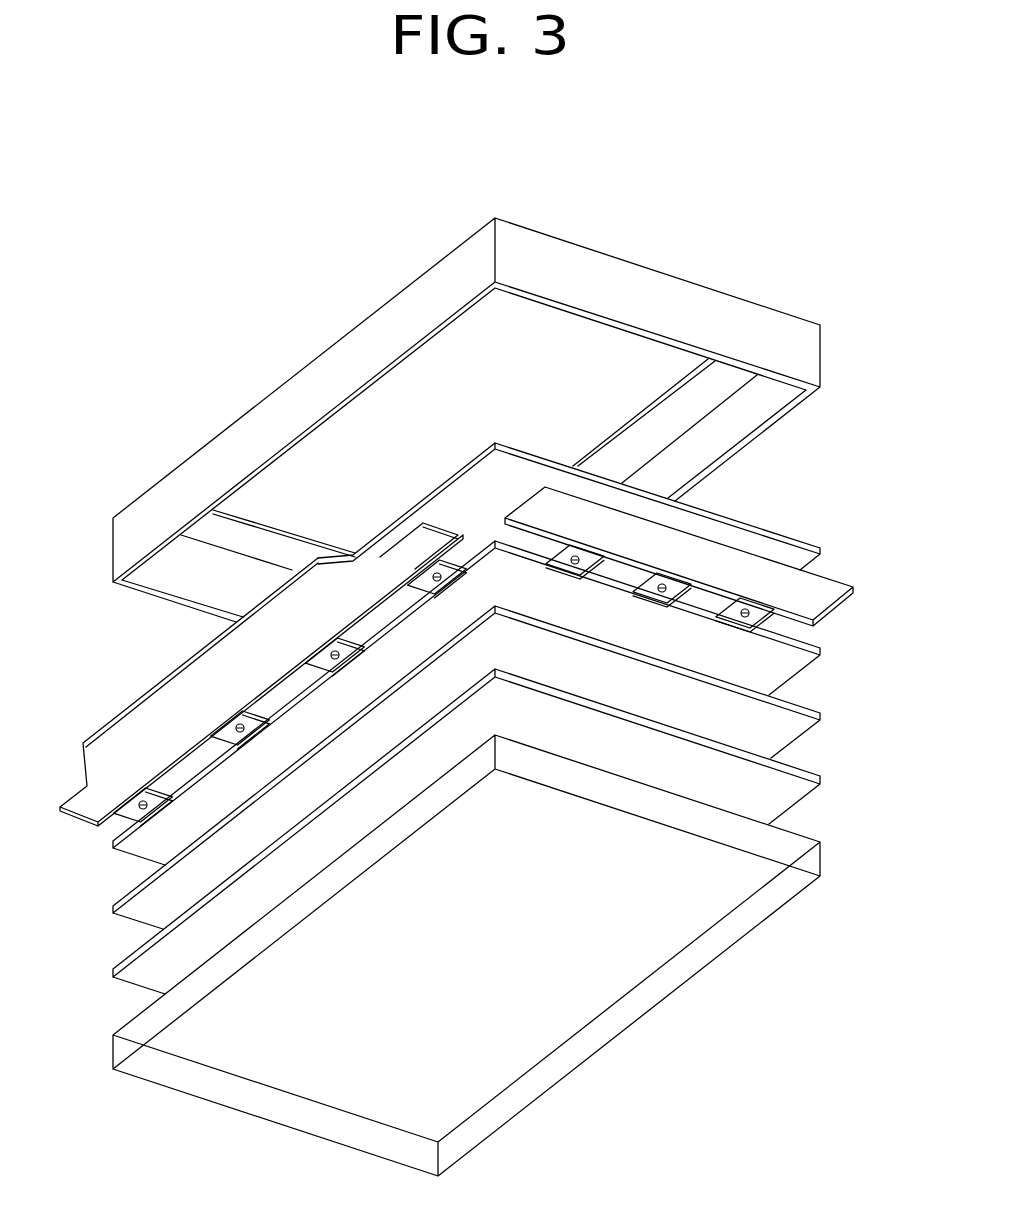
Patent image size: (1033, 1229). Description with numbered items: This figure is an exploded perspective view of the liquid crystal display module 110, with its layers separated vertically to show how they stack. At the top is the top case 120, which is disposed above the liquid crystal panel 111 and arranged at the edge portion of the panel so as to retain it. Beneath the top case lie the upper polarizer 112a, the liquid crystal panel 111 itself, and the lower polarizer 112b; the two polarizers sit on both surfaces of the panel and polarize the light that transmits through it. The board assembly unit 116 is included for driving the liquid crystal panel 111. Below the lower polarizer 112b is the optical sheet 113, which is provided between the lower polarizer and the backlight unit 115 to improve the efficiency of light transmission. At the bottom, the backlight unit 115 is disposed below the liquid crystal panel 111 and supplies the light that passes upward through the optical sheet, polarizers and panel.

The liquid crystal display module 110 is at (918, 166).
The top case 120 is at (810, 345).
The upper polarizer 112a is at (822, 549).
The board assembly unit 116 is at (816, 572).
The liquid crystal panel 111 is at (822, 649).
The lower polarizer 112b is at (822, 714).
The optical sheet 113 is at (822, 777).
The backlight unit 115 is at (812, 849).